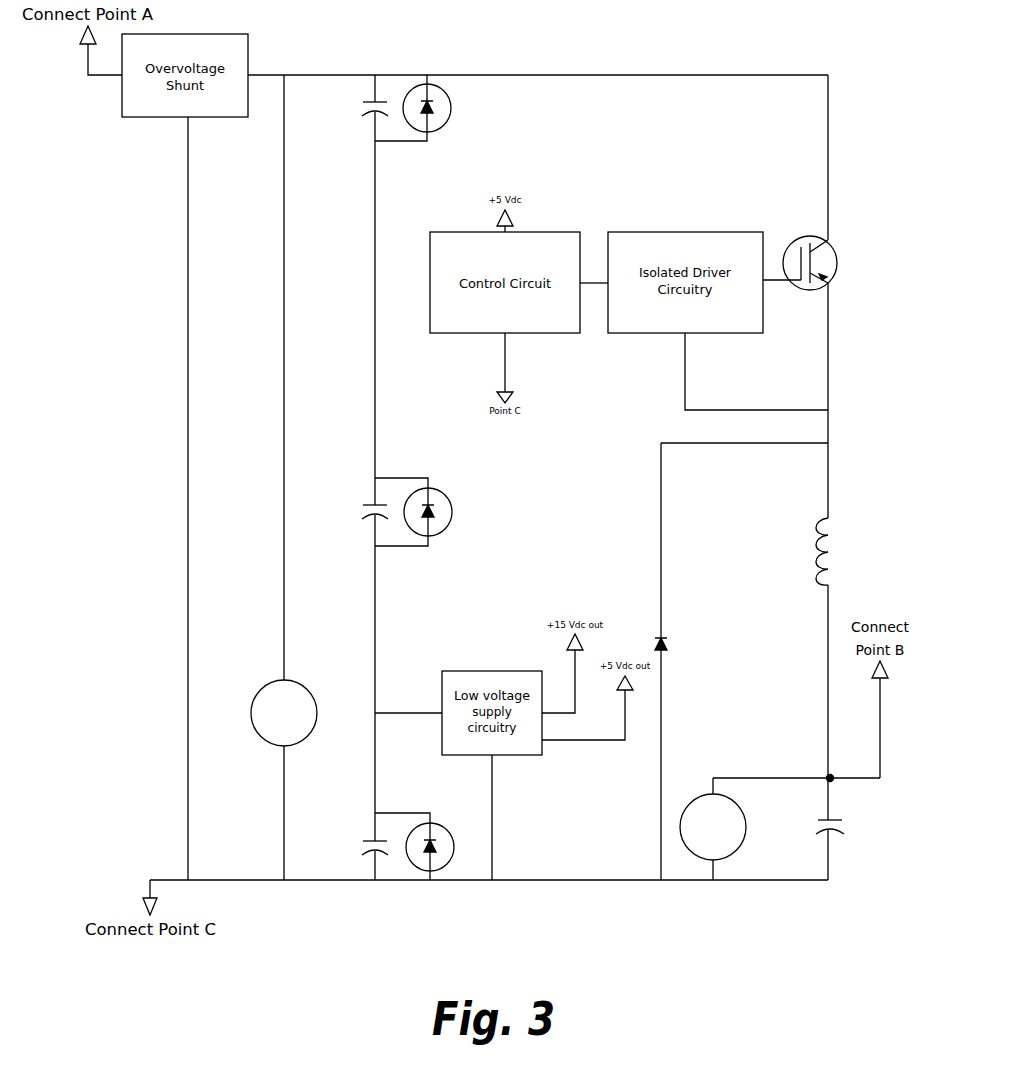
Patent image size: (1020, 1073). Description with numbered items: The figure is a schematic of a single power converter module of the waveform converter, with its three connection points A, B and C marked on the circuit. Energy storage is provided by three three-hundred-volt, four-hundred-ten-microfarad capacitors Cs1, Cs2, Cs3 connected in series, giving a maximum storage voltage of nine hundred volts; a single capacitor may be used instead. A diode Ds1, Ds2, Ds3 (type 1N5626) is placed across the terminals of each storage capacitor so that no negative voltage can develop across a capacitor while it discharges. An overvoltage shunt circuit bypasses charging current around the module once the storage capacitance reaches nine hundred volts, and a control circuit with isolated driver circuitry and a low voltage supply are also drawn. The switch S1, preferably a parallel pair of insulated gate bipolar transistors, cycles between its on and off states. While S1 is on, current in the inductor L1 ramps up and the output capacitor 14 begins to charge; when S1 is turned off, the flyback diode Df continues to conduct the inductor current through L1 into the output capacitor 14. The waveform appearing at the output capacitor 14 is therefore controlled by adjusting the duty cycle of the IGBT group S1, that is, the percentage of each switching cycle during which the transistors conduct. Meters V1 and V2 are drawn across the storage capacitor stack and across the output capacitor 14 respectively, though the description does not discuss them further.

The output capacitor 14 is at (842, 812).
The switch S1 is at (828, 263).
The inductor L1 is at (846, 551).
The flyback diode Df is at (689, 645).
The voltmeter V1 is at (284, 713).
The voltmeter V2 is at (713, 827).
The storage capacitor Cs1 is at (351, 848).
The storage capacitor Cs2 is at (350, 515).
The storage capacitor Cs3 is at (350, 108).
The diode Ds1 is at (414, 825).
The diode Ds2 is at (442, 512).
The diode Ds3 is at (441, 108).